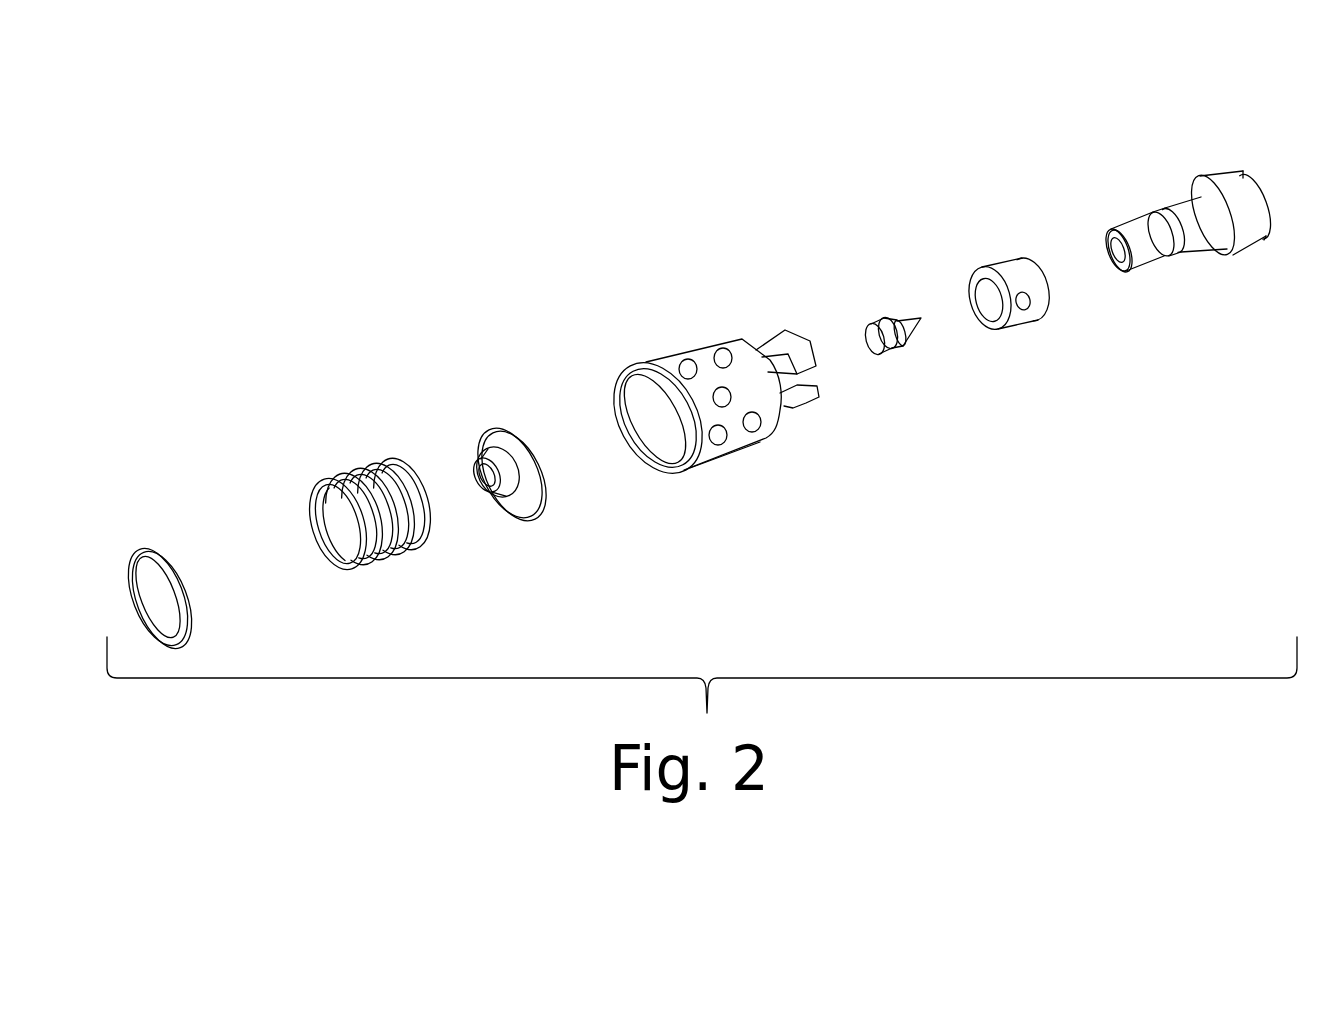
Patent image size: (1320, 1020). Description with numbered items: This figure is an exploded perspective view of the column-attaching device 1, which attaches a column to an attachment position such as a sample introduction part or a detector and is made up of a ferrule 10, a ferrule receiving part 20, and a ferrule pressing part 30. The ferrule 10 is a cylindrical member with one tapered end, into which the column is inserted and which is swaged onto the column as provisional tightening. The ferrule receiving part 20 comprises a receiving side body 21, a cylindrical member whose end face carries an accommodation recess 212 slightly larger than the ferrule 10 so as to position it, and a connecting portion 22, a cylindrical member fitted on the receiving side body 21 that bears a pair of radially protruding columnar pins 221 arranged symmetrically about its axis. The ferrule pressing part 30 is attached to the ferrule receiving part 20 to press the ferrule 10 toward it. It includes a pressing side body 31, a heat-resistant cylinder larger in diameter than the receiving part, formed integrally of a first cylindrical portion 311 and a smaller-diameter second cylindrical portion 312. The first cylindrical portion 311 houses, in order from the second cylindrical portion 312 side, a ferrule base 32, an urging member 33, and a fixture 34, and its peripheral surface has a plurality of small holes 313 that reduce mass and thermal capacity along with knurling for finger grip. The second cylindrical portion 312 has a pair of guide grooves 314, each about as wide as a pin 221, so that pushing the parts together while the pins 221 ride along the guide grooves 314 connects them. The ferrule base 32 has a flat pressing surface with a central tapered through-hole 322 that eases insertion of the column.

The column-attaching device 1 is at (734, 168).
The ferrule 10 is at (893, 350).
The ferrule receiving part 20 is at (1197, 440).
The receiving side body 21 is at (1203, 250).
The accommodation recess 212 is at (1108, 246).
The connecting portion 22 is at (1033, 322).
The pins 221 is at (1021, 292).
The ferrule pressing part 30 is at (265, 213).
The pressing side body 31 is at (668, 355).
The first cylindrical portion 311 is at (736, 447).
The second cylindrical portion 312 is at (800, 405).
The small holes 313 is at (694, 358).
The guide grooves 314 is at (773, 333).
The ferrule base 32 is at (500, 427).
The through-hole 322 is at (486, 500).
The urging member 33 is at (350, 478).
The fixture 34 is at (153, 548).